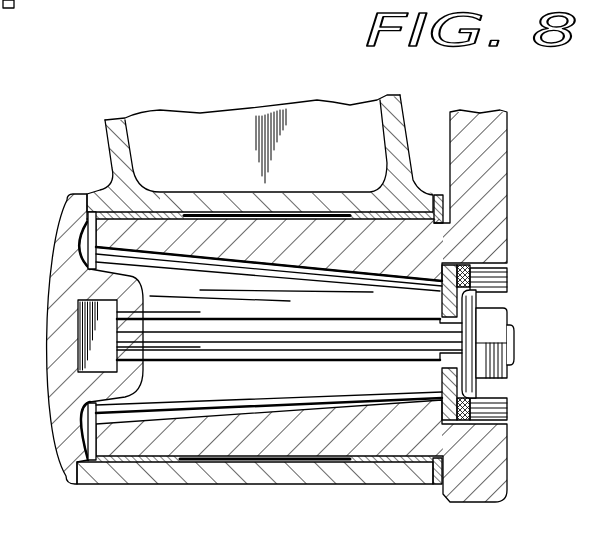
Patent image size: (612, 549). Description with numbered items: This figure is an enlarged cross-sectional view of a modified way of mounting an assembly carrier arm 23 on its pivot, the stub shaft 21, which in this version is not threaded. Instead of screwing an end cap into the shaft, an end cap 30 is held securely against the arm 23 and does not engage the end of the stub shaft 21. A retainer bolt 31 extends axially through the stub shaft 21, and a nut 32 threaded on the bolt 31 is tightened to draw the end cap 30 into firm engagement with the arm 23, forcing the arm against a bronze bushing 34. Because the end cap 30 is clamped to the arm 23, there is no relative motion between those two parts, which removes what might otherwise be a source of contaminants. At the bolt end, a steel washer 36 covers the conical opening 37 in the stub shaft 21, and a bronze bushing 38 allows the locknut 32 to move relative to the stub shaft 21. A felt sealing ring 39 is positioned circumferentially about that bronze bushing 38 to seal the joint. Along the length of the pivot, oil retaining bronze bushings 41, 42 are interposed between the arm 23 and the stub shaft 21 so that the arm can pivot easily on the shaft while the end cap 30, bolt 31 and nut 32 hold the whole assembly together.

The stub shaft 21 is at (370, 419).
The assembly carrier arm 23 is at (108, 147).
The end cap 30 is at (52, 438).
The retainer bolt 31 is at (515, 340).
The nut 32 is at (503, 372).
The bronze bushing 34 is at (434, 196).
The steel washer 36 is at (442, 272).
The conical opening 37 is at (253, 397).
The bronze bushing 38 is at (508, 416).
The felt sealing ring 39 is at (502, 271).
The oil retaining bronze bushing 41 is at (150, 461).
The oil retaining bronze bushing 42 is at (377, 463).